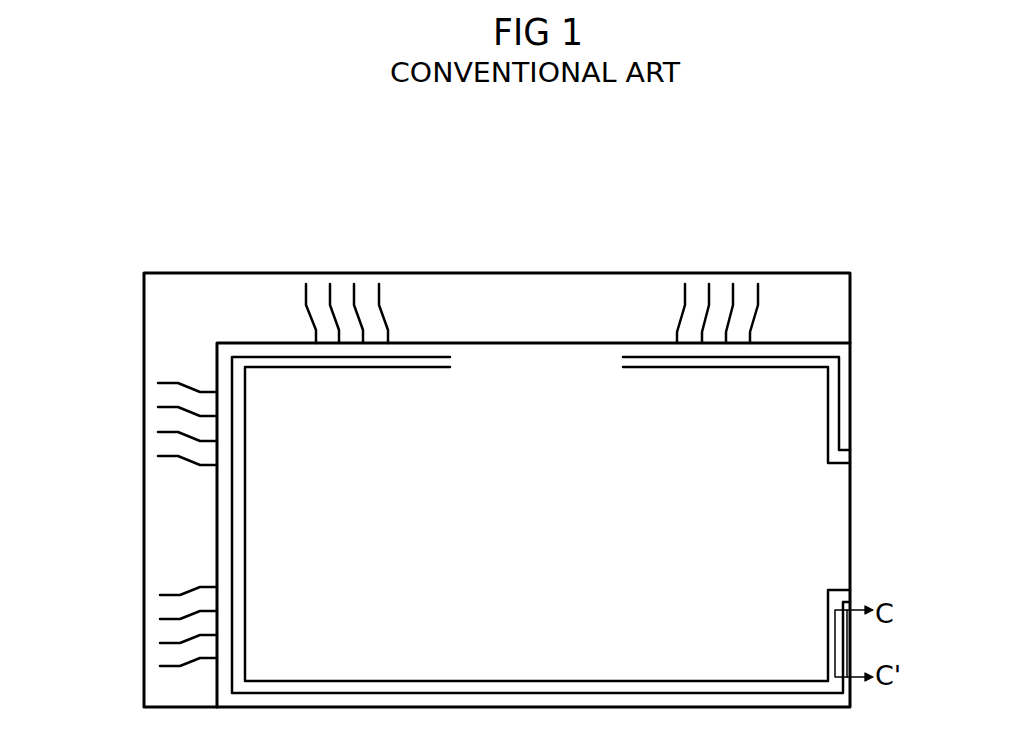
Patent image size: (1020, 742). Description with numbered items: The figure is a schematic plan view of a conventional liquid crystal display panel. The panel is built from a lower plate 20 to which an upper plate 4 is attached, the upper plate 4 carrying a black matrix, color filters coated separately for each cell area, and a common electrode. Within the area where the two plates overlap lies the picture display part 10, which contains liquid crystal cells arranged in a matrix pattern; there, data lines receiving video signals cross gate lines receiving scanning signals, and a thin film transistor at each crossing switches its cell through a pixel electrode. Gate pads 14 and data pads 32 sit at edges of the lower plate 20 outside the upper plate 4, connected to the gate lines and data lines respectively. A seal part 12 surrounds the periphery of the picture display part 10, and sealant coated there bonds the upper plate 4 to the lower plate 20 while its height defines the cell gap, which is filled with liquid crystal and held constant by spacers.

The upper plate 4 is at (840, 383).
The picture display part 10 is at (540, 447).
The seal part 12 is at (828, 431).
The gate pads 14 is at (104, 397).
The lower plate 20 is at (838, 311).
The data pads 32 is at (709, 228).